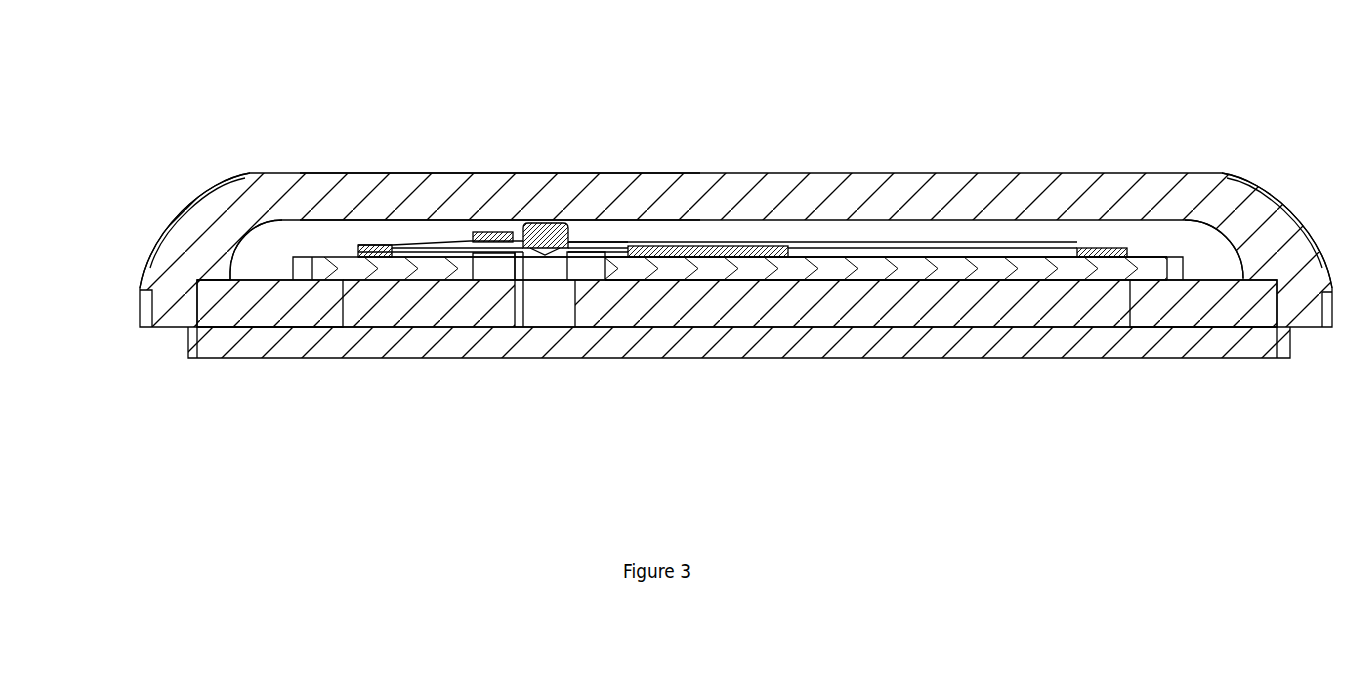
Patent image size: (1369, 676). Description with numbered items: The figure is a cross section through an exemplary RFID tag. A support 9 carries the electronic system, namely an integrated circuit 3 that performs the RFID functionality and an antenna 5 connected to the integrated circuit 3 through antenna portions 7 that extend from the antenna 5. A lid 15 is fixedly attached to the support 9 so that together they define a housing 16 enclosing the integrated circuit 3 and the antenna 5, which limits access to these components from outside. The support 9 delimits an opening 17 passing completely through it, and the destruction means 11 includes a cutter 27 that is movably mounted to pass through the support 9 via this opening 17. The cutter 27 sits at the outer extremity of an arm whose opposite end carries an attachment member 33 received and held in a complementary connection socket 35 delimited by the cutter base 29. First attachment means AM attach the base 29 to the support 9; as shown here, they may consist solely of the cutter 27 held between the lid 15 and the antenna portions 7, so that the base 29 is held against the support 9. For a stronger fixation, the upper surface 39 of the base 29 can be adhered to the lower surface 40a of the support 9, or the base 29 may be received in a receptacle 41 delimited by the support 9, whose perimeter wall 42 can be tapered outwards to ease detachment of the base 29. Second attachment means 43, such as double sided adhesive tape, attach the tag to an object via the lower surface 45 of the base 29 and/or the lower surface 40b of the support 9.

The integrated circuit 3 is at (735, 241).
The antenna 5 is at (400, 250).
The antenna portions 7 is at (537, 253).
The support 9 is at (887, 267).
The destruction means 11 is at (537, 197).
The lid 15 is at (372, 192).
The housing 16 is at (1205, 248).
The opening 17 is at (585, 267).
The cutter 27 is at (547, 237).
The cutter base 29 is at (700, 307).
The attachment member 33 is at (545, 303).
The connection socket 35 is at (519, 314).
The upper surface of the base 39 is at (650, 285).
The lower surface of the support 40a is at (935, 280).
The lower surface of the support 40b is at (262, 327).
The receptacle 41 is at (1130, 305).
The perimeter wall 42 is at (348, 292).
The second attachment means 43 is at (372, 342).
The lower surface of the base 45 is at (767, 328).
The first attachment means AM is at (580, 236).